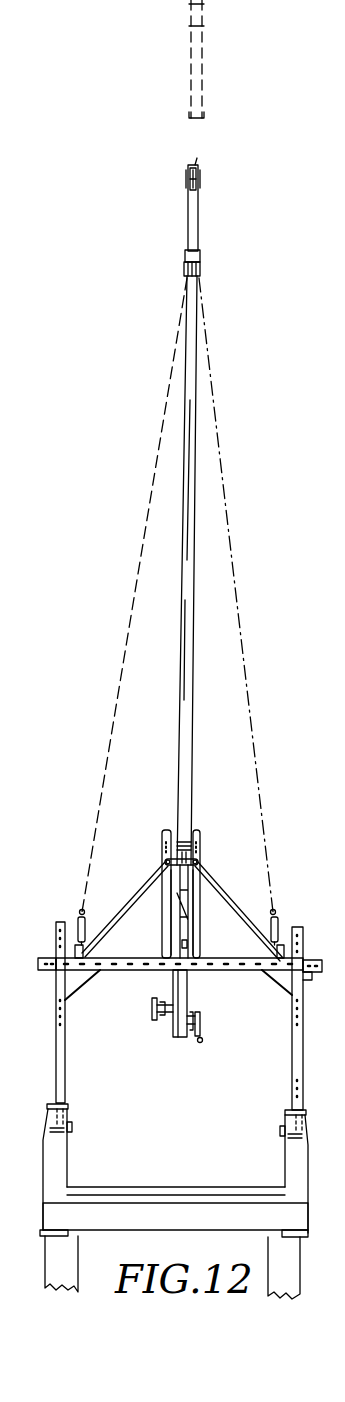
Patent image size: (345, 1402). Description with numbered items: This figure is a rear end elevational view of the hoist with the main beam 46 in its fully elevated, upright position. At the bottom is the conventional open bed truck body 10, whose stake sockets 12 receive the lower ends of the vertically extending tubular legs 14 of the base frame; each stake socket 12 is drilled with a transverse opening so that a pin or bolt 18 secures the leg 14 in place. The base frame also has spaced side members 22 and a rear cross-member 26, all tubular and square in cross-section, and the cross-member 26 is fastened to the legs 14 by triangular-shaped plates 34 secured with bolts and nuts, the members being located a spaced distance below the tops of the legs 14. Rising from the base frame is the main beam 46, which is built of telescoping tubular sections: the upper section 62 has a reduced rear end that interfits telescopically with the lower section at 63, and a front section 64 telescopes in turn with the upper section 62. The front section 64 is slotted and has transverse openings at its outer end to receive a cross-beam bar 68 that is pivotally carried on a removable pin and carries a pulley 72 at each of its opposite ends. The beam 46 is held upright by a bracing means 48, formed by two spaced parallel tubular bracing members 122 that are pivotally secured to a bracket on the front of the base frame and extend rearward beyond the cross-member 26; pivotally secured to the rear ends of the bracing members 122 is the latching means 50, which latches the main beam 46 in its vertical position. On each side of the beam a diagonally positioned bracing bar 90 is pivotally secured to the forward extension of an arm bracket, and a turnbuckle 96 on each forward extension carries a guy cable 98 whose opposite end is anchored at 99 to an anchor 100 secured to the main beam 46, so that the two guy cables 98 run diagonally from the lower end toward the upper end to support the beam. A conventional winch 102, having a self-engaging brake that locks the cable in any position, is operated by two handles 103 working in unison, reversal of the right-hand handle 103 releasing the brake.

The open bed truck body 10 is at (45, 1138).
The stake socket 12 is at (65, 1114).
The leg 14 is at (55, 1033).
The pin or bolt 18 is at (72, 1127).
The side member 22 is at (47, 969).
The rear cross-member 26 is at (120, 970).
The triangular-shaped plate 34 is at (80, 985).
The main beam 46 is at (195, 680).
The bracing means 48 is at (198, 830).
The latching means 50 is at (178, 933).
The upper section 62 is at (196, 484).
The telescopic interfit 63 is at (185, 600).
The front section 64 is at (200, 218).
The cross-beam bar 68 is at (197, 162).
The pulley 72 is at (200, 182).
The bracing bar 90 is at (130, 902).
The turnbuckle 96 is at (78, 930).
The guy cable 98 is at (118, 688).
The anchor point 99 is at (198, 288).
The anchor 100 is at (200, 262).
The winch 102 is at (183, 1000).
The handle 103 is at (160, 1005).
The tubular bracing member 122 is at (168, 852).